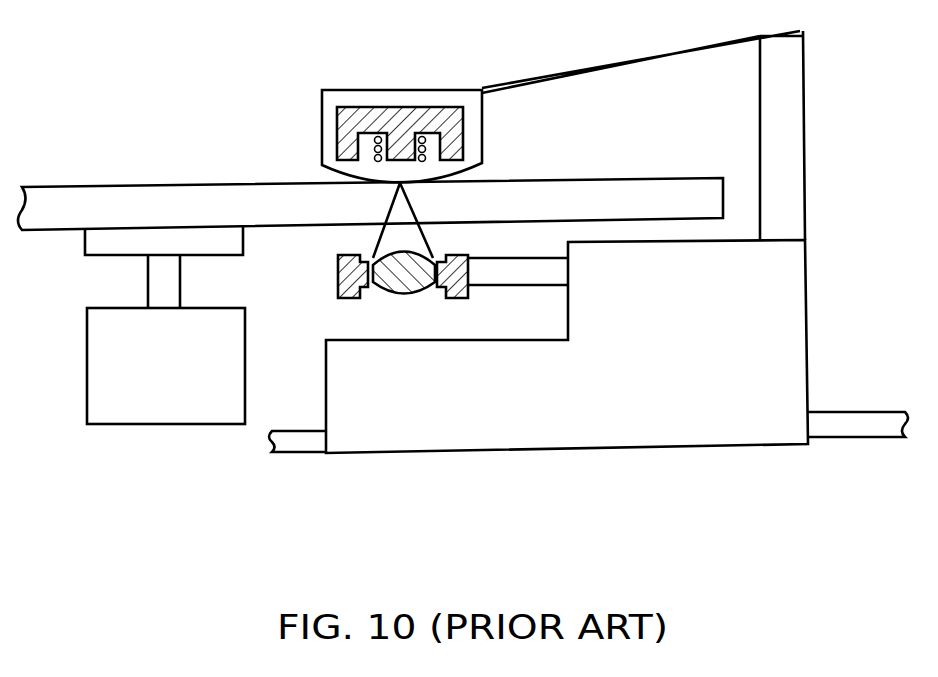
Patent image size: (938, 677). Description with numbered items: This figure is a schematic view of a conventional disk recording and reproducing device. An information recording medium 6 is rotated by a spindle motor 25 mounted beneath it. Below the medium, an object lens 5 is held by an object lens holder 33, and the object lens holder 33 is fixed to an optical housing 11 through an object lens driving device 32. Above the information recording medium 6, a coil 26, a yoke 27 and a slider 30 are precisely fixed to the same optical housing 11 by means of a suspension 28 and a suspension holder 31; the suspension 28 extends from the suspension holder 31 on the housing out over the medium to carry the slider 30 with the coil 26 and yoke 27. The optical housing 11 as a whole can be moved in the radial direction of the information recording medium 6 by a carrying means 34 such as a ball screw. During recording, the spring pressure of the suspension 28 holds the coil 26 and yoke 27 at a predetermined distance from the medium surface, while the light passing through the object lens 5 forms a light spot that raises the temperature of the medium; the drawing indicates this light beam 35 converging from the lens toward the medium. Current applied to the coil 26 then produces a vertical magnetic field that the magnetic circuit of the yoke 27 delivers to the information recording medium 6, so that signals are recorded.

The object lens 5 is at (390, 284).
The information recording medium 6 is at (180, 197).
The optical housing 11 is at (785, 335).
The spindle motor 25 is at (168, 409).
The coil 26 is at (360, 141).
The yoke 27 is at (387, 115).
The suspension 28 is at (612, 60).
The slider 30 is at (447, 95).
The suspension holder 31 is at (793, 146).
The object lens driving device 32 is at (527, 263).
The object lens holder 33 is at (350, 274).
The carrying means 34 is at (835, 425).
The light beam 35 is at (415, 212).